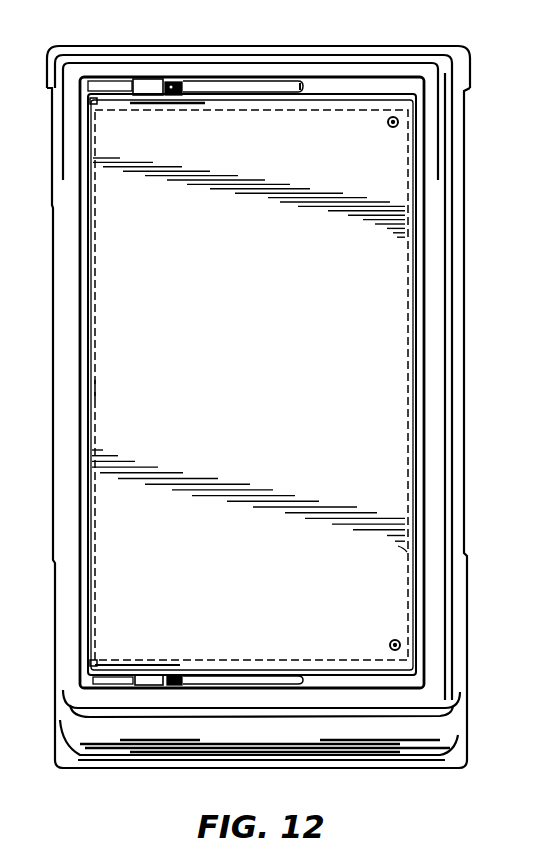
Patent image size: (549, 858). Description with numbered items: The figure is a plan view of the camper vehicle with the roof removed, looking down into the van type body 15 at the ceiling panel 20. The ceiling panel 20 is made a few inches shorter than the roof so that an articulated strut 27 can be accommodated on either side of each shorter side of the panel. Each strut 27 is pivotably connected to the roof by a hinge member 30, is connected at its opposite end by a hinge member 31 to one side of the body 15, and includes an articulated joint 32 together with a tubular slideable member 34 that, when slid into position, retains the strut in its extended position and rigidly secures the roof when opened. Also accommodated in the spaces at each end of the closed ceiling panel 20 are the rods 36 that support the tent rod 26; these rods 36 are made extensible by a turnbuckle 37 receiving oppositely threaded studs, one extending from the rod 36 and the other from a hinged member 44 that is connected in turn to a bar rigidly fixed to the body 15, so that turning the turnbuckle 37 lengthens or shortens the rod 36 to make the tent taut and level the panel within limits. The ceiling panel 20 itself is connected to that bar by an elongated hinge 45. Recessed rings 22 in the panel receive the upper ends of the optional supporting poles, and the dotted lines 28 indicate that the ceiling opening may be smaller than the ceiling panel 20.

The van type body 15 is at (465, 650).
The ceiling panel 20 is at (307, 358).
The recessed ring 22 is at (388, 125).
The tent rod 26 is at (420, 168).
The articulated struts 27 is at (255, 81).
The dotted lines 28 is at (398, 549).
The hinge member 30 is at (174, 81).
The hinge member 31 is at (88, 79).
The articulated joint 32 is at (303, 92).
The tubular slideable member 34 is at (147, 78).
The rods 36 is at (205, 104).
The turnbuckle 37 is at (115, 664).
The hinged member 44 is at (93, 105).
The elongated hinge 45 is at (90, 389).